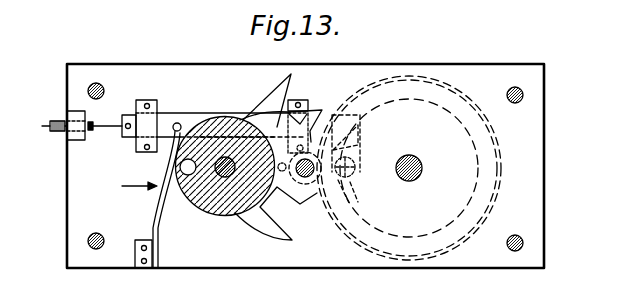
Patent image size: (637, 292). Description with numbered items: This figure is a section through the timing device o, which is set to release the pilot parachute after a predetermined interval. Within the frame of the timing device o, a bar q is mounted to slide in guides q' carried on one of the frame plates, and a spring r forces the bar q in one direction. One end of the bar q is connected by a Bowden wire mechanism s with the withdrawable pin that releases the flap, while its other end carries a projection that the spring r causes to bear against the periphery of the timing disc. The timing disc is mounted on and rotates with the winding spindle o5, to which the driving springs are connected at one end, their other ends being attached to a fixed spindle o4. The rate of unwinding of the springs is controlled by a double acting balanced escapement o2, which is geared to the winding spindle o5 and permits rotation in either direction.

The timing device o is at (152, 73).
The Bowden wire mechanism s is at (60, 132).
The guides q' is at (227, 94).
The bar q is at (231, 87).
The spring r is at (152, 208).
The double acting balanced escapement o2 is at (264, 99).
The winding spindle o5 is at (418, 159).
The fixed spindle o4 is at (515, 103).